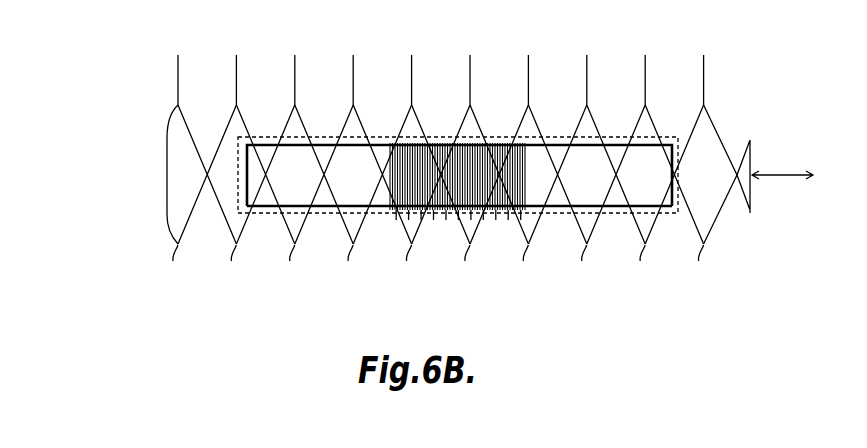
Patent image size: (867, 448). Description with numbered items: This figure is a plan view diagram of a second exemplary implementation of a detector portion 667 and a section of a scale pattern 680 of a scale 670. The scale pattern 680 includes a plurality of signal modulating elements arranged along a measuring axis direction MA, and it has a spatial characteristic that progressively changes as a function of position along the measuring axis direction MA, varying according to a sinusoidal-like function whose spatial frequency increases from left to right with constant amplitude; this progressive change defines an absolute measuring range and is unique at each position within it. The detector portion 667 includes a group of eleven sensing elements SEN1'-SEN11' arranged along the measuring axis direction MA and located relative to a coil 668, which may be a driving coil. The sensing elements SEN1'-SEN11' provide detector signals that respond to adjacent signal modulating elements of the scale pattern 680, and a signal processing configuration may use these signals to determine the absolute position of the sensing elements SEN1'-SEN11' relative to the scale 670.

The scale 670 is at (748, 80).
The scale pattern 680 is at (140, 183).
The detector portion 667 is at (613, 137).
The coil 668 is at (617, 213).
The measuring axis direction MA is at (781, 170).
The sensing elements SEN1'-SEN11' is at (458, 115).